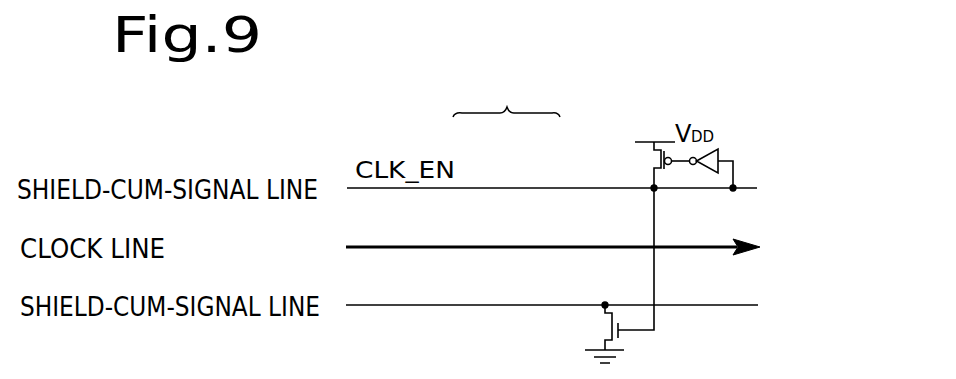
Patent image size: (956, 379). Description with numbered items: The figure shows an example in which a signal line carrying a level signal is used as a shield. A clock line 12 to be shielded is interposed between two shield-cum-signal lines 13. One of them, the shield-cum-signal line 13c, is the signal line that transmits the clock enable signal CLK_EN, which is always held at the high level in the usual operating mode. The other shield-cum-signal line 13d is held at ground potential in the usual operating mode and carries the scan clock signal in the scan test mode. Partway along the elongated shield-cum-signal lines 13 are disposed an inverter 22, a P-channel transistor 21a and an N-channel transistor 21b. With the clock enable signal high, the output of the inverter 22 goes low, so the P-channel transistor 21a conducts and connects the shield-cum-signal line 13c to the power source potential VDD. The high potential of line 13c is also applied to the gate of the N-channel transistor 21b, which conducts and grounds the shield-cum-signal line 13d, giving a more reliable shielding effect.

The clock line 12 is at (555, 247).
The shield-cum-signal lines 13 is at (506, 97).
The shield-cum-signal line 13c is at (468, 188).
The shield-cum-signal line 13d is at (512, 305).
The P-channel transistor 21a is at (654, 160).
The N-channel transistor 21b is at (605, 330).
The inverter 22 is at (719, 151).